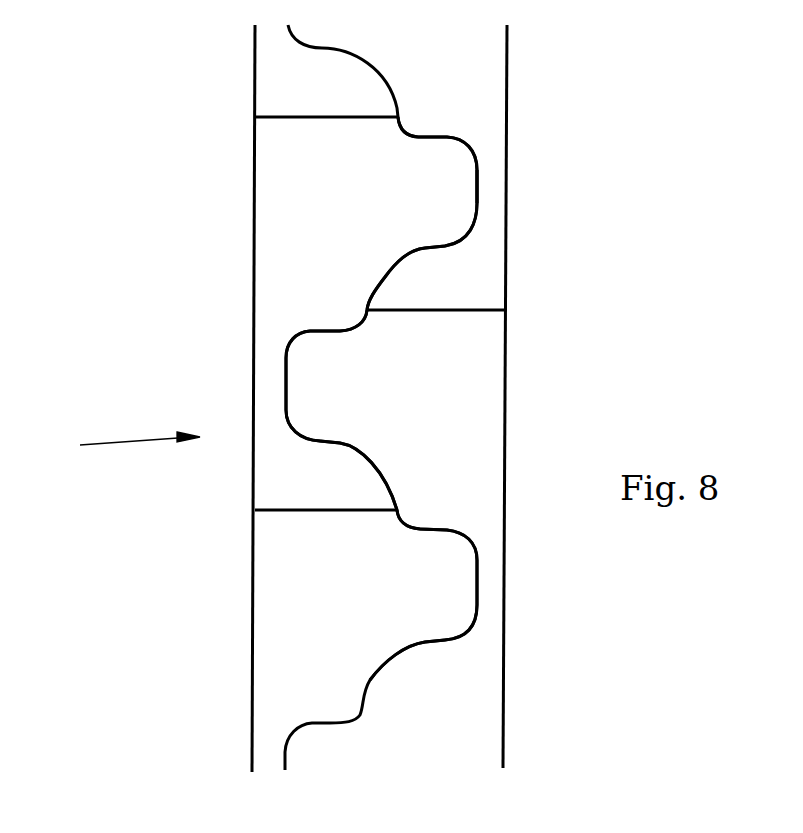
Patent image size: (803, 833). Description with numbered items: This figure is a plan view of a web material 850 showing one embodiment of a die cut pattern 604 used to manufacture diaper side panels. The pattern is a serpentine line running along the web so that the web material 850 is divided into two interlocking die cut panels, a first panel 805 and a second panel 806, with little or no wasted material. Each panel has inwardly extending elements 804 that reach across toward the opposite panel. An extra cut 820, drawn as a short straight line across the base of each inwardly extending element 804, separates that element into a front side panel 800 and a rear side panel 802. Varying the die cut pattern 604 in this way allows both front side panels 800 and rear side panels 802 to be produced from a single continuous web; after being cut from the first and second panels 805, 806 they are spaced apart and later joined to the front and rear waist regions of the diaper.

The front side panel 800 is at (282, 80).
The rear side panel 802 is at (428, 190).
The inwardly extending element 804 is at (343, 202).
The extra cut 820 is at (292, 117).
The die cut pattern 604 is at (478, 160).
The web material 850 is at (117, 446).
The first panel 805 is at (475, 725).
The second panel 806 is at (267, 707).